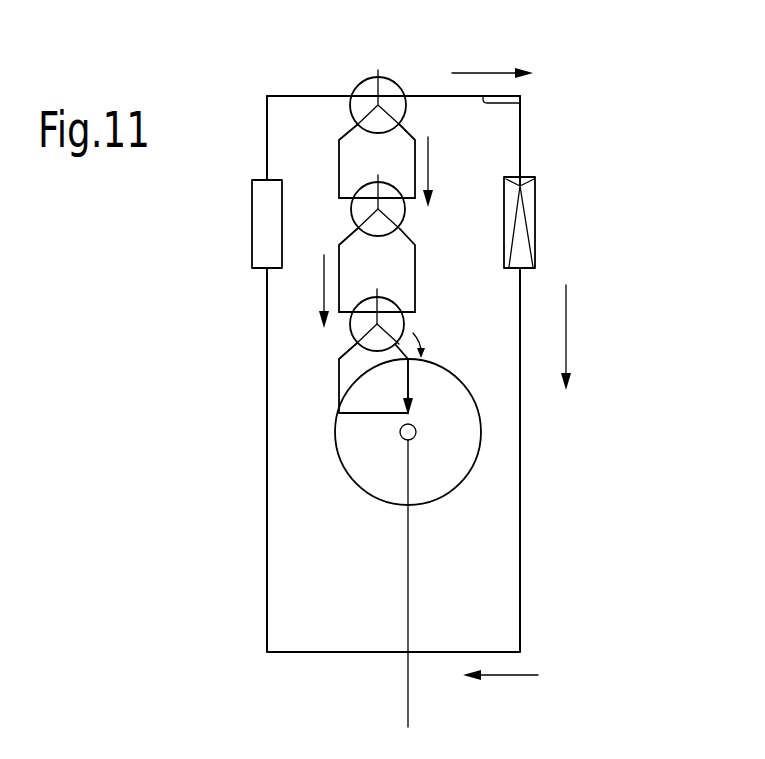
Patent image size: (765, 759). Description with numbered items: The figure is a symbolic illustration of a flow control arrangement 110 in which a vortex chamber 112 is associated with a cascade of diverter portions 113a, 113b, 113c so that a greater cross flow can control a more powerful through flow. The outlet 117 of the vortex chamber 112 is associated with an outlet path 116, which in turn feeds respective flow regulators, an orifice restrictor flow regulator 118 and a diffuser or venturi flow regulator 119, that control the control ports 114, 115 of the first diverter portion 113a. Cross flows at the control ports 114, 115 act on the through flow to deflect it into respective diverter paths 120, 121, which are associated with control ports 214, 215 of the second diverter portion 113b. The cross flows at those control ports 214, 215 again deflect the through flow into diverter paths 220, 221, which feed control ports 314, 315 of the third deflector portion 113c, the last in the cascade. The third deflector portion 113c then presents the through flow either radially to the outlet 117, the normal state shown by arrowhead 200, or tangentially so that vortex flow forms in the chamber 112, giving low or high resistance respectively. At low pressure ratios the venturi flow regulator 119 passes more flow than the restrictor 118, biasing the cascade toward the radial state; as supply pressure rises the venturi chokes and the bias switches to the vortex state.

The printing unit / device 110 is at (565, 118).
The vortex chamber 112 is at (452, 472).
The first diverter portion 113a is at (395, 82).
The second diverter portion 113b is at (350, 195).
The third deflector portion 113c is at (352, 338).
The control port 114 is at (318, 95).
The control port 115 is at (522, 103).
The outlet path 116 is at (407, 685).
The outlet 117 is at (417, 432).
The orifice restrictor flow regulator 118 is at (263, 238).
The diffuser or venturi flow regulator 119 is at (535, 252).
The diverter path 120 is at (340, 152).
The diverter path 121 is at (416, 162).
The arrowhead 200 is at (408, 388).
The control port 214 is at (341, 198).
The control port 215 is at (401, 202).
The diverter path 220 is at (350, 283).
The diverter path 221 is at (415, 285).
The control port 314 is at (340, 314).
The control port 315 is at (417, 313).